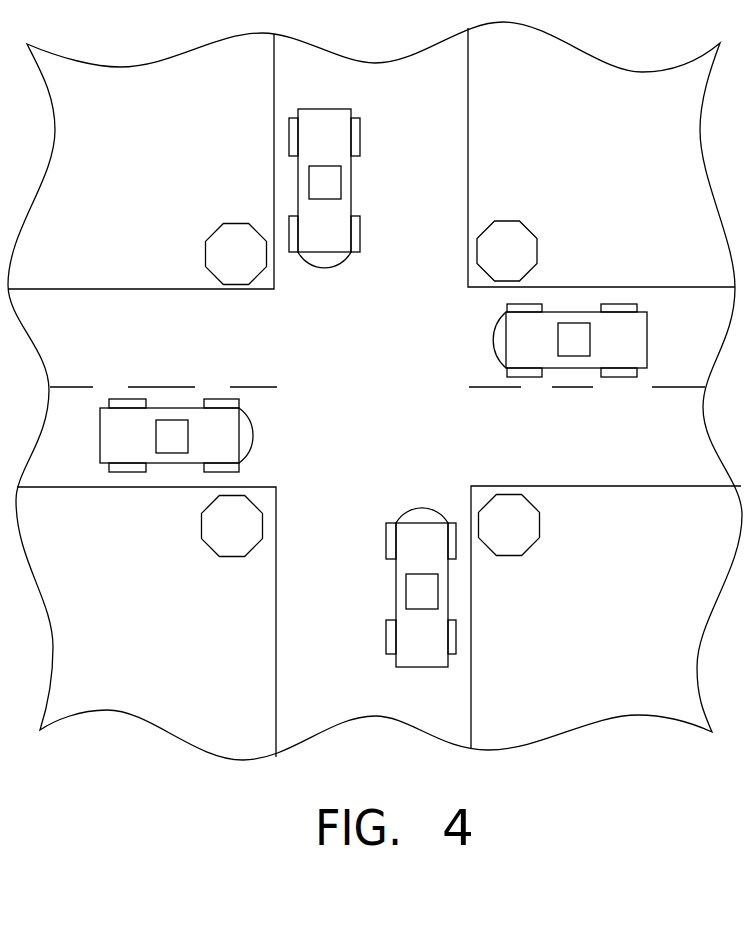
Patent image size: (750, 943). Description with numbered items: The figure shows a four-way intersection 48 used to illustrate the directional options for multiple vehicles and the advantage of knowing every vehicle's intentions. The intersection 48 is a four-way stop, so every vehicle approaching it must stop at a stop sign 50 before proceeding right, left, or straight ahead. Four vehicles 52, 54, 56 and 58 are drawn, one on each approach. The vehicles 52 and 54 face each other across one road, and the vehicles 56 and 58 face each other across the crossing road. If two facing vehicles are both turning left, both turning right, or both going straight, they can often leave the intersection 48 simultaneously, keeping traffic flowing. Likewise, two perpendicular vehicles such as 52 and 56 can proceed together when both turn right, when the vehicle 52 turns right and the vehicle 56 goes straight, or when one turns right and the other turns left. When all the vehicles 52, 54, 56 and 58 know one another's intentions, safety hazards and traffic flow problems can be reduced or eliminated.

The 4-way intersection 48 is at (526, 180).
The stop sign 50 is at (215, 234).
The vehicle 52 is at (493, 338).
The vehicle 54 is at (255, 434).
The vehicle 56 is at (325, 267).
The vehicle 58 is at (422, 508).